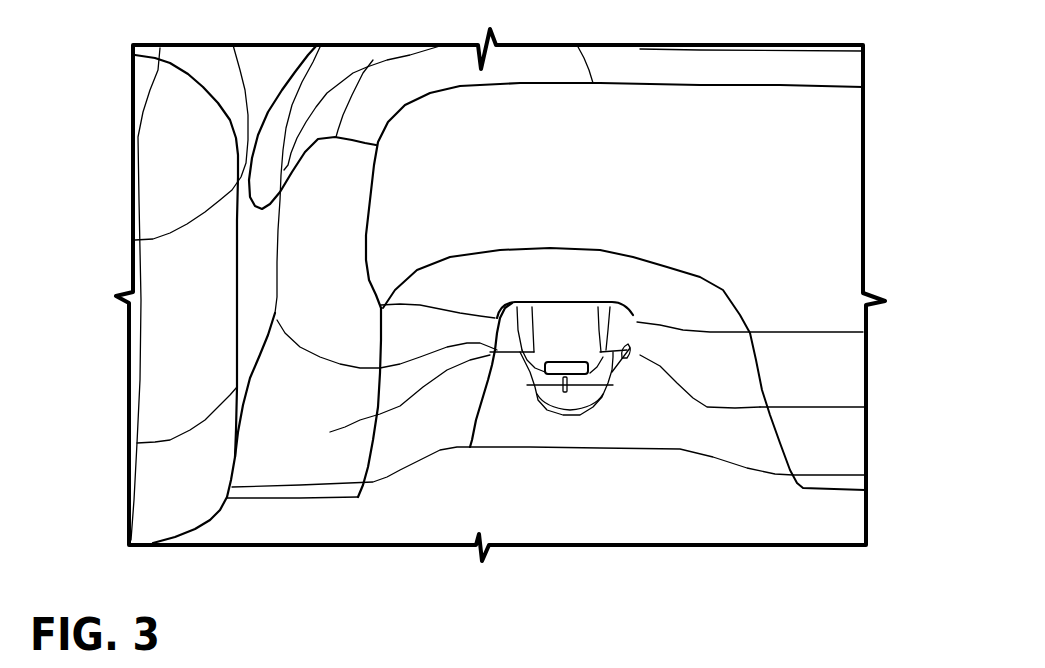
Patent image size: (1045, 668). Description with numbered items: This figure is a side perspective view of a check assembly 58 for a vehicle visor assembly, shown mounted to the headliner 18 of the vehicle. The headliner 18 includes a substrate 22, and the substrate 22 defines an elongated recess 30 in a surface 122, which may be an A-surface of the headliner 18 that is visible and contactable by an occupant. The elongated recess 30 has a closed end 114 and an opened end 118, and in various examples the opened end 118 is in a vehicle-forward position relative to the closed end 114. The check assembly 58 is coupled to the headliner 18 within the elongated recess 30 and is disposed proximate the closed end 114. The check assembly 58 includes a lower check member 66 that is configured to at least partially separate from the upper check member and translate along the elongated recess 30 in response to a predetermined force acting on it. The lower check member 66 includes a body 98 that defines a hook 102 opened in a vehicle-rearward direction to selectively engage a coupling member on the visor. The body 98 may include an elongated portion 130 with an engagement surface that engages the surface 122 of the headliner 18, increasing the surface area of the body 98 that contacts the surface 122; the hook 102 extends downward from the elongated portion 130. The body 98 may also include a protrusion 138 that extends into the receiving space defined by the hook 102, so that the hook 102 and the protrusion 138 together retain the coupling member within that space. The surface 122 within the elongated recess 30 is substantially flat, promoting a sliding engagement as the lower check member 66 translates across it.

The headliner 18 is at (646, 278).
The substrate 22 is at (783, 431).
The elongated recess 30 is at (726, 515).
The check assembly 58 is at (655, 381).
The lower check member 66 is at (418, 485).
The body 98 is at (612, 457).
The hook 102 is at (558, 465).
The closed end 114 is at (666, 319).
The opened end 118 is at (602, 522).
The surface 122 is at (506, 460).
The elongated portion 130 is at (779, 295).
The protrusion 138 is at (615, 494).